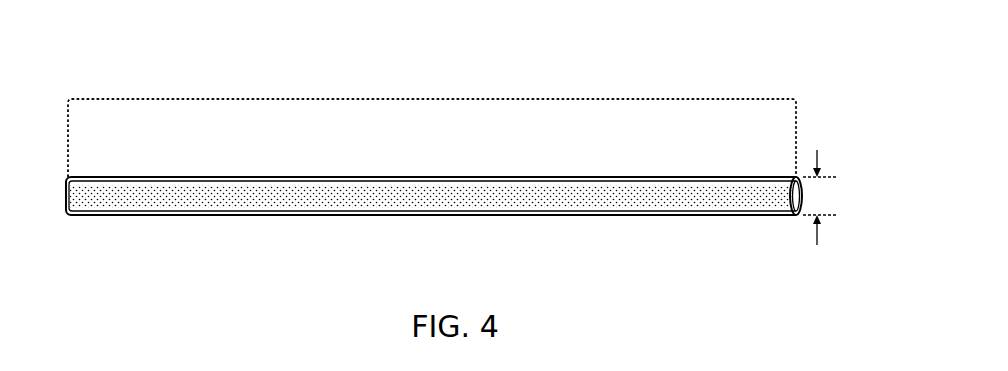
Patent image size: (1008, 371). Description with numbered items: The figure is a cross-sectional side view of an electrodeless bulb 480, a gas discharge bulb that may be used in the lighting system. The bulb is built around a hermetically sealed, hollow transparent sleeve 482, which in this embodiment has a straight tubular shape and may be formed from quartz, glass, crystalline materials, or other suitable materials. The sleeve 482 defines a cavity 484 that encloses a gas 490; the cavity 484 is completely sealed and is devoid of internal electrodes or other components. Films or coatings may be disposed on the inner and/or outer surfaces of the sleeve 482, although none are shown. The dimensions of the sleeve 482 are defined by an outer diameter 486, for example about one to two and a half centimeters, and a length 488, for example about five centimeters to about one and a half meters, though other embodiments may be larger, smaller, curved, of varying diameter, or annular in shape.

The electrodeless bulb 480 is at (732, 66).
The transparent sleeve 482 is at (453, 178).
The cavity 484 is at (176, 189).
The outer diameter 486 is at (817, 150).
The length 488 is at (433, 99).
The gas 490 is at (348, 197).